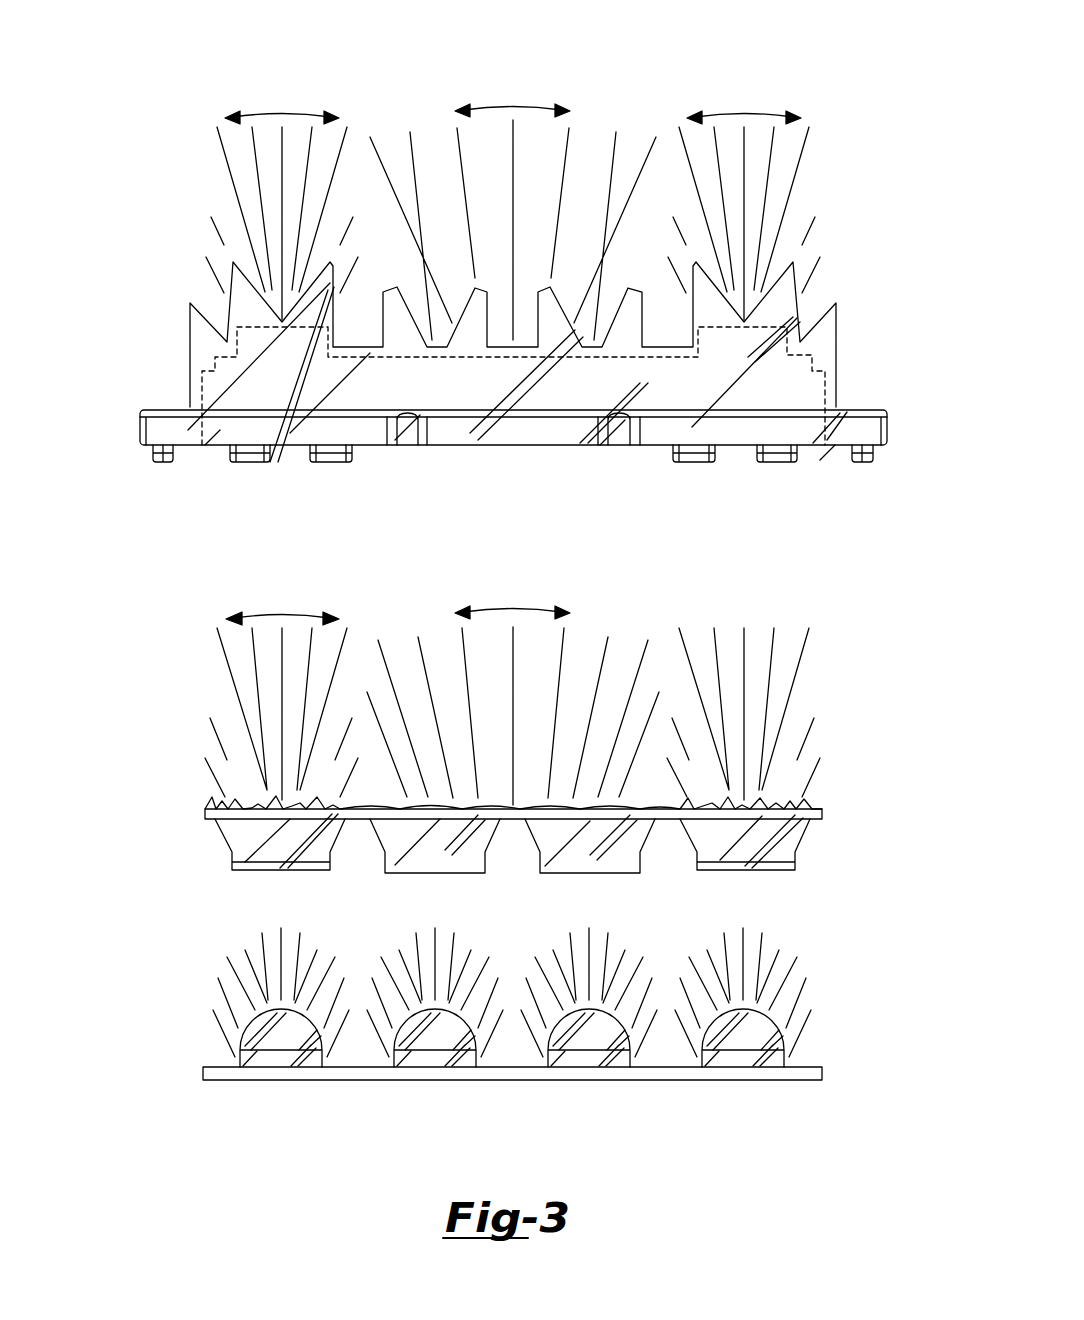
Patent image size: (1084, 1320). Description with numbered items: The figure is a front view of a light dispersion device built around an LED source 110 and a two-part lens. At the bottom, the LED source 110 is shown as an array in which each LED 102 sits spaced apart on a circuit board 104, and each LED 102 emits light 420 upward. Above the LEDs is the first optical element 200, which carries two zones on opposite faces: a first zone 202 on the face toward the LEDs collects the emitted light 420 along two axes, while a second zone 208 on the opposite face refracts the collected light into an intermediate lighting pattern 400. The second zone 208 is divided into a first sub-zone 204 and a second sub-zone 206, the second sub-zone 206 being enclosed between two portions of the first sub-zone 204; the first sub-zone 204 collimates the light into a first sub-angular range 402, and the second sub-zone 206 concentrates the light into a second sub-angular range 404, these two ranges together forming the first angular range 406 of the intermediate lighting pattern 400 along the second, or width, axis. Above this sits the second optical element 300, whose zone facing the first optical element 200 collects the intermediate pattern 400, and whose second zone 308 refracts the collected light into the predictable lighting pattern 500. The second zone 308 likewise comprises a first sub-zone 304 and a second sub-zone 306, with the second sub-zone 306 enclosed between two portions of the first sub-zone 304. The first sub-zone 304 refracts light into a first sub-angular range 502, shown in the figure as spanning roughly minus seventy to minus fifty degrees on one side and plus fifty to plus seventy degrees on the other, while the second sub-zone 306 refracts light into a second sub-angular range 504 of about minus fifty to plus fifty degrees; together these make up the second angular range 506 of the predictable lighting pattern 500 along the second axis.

The LED 102 is at (278, 1032).
The substrate 104 is at (226, 1081).
The LED source 110 is at (832, 1007).
The first optical element 200 is at (200, 860).
The first zone 202 is at (809, 828).
The first sub-zone 204 is at (372, 876).
The second sub-zone 206 is at (647, 876).
The second zone 208 is at (212, 808).
The second optical element 300 is at (168, 387).
The first sub-zone 304 is at (357, 472).
The second sub-zone 306 is at (665, 472).
The second zone 308 is at (162, 263).
The intermediate lighting pattern 400 is at (179, 625).
The first sub-angular range along the second axis 402 is at (357, 576).
The second sub-angular range along the second axis 404 is at (665, 576).
The first angular range along the second axis 406 is at (161, 625).
The light emitted 420 is at (832, 925).
The predictable lighting pattern 500 is at (163, 85).
The first sub-angular range along the second axis 502 is at (357, 64).
The second sub-angular range along the second axis 504 is at (665, 64).
The second angular range along the second axis 506 is at (149, 85).